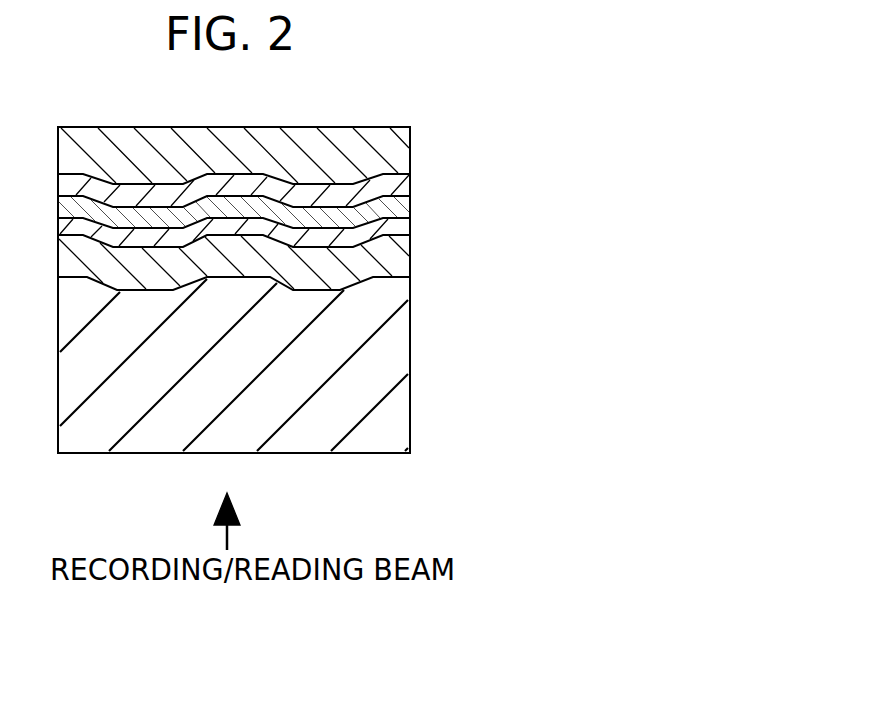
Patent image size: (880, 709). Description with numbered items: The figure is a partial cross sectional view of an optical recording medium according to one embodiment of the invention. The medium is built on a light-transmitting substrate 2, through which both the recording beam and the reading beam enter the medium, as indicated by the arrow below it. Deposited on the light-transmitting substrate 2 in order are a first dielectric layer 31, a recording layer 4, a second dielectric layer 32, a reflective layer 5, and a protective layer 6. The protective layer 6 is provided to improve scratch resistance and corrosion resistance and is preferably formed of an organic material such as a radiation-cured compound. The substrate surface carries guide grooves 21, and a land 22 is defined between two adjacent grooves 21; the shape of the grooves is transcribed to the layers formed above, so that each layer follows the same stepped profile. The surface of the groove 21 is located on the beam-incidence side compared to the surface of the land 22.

The light-transmitting substrate 2 is at (410, 362).
The guide groove 21 is at (310, 295).
The land 22 is at (233, 283).
The first dielectric layer 31 is at (410, 265).
The recording layer 4 is at (410, 233).
The second dielectric layer 32 is at (410, 210).
The reflective layer 5 is at (410, 191).
The protective layer 6 is at (410, 155).